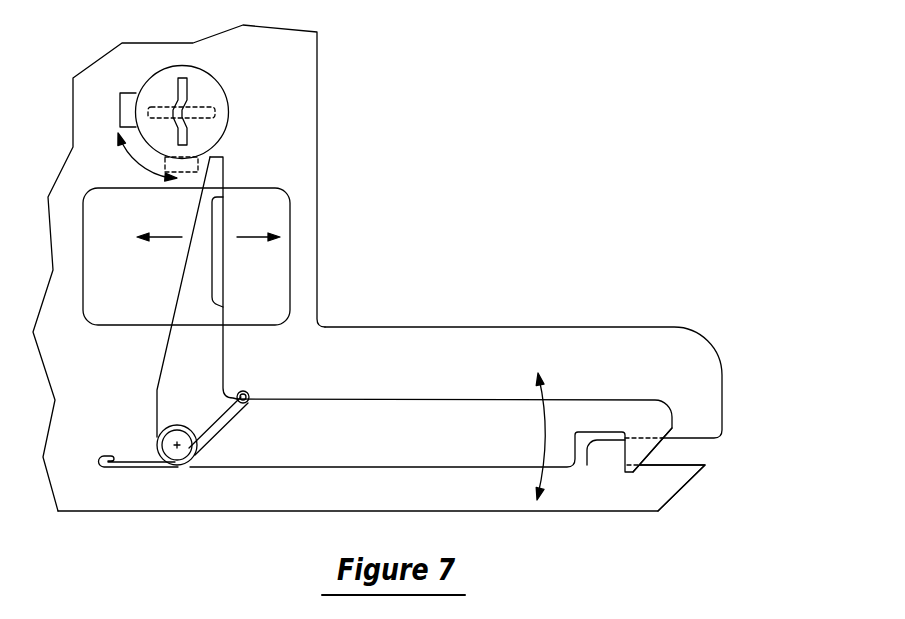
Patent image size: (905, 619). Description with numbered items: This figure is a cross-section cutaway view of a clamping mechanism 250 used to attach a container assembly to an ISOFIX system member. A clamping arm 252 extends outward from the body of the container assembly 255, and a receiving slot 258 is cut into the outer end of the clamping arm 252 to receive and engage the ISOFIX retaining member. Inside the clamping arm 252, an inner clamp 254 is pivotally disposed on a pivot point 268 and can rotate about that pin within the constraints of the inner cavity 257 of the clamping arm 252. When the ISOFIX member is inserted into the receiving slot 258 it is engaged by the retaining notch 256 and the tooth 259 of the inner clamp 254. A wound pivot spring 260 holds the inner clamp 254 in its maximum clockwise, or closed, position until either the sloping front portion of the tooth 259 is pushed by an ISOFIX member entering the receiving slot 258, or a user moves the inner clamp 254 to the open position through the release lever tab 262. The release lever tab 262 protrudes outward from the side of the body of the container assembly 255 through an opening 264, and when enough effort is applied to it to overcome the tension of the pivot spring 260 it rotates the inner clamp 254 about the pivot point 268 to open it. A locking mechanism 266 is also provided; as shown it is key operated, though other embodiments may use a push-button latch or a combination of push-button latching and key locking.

The clamping mechanism 250 is at (347, 155).
The clamping arm 252 is at (707, 340).
The inner clamp 254 is at (373, 400).
The body of the container assembly 255 is at (317, 66).
The retaining notch 256 is at (600, 452).
The inner cavity 257 is at (640, 378).
The receiving slot 258 is at (712, 451).
The tooth 259 is at (643, 450).
The wound pivot spring 260 is at (137, 461).
The release lever tab 262 is at (225, 270).
The opening 264 is at (142, 290).
The locking mechanism 266 is at (220, 87).
The pivot point 268 is at (178, 446).